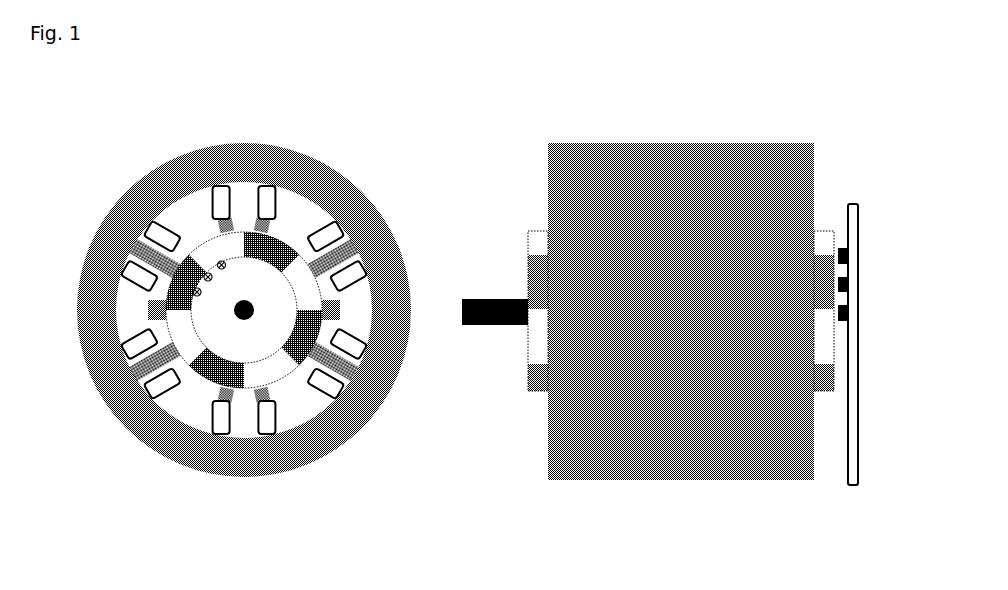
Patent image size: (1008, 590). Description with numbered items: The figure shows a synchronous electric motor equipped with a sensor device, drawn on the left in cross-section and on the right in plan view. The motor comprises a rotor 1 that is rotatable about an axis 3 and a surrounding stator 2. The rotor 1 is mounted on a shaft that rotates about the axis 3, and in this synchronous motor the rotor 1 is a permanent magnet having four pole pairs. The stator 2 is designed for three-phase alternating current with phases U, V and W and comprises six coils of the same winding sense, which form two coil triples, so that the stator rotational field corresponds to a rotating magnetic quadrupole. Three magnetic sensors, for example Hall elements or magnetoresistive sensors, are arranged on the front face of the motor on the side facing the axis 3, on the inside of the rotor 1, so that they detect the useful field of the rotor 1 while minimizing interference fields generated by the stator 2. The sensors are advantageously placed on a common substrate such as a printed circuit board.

The rotor 1 is at (215, 249).
The stator 2 is at (338, 178).
The axis 3 is at (243, 314).